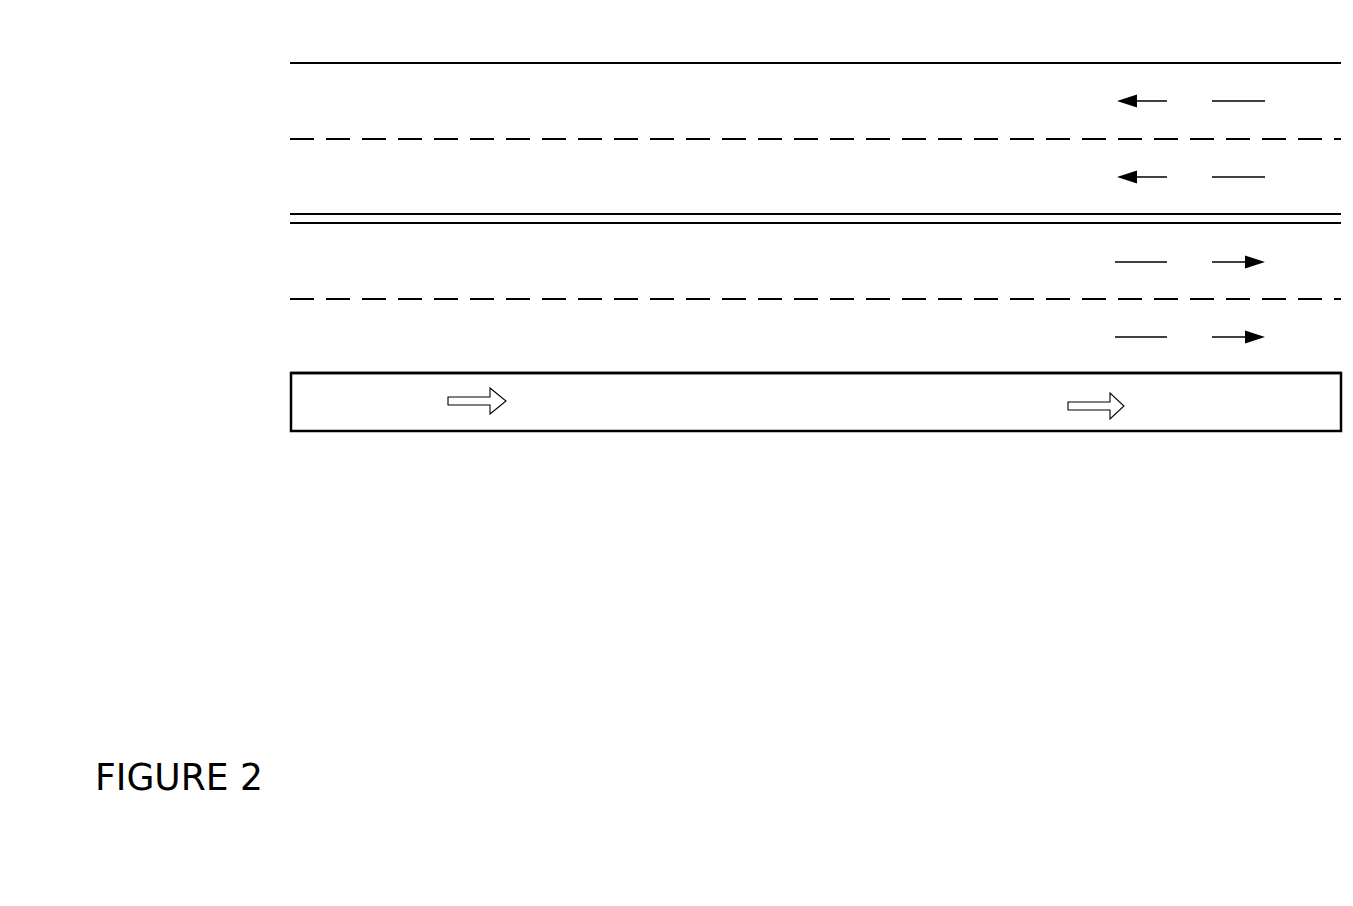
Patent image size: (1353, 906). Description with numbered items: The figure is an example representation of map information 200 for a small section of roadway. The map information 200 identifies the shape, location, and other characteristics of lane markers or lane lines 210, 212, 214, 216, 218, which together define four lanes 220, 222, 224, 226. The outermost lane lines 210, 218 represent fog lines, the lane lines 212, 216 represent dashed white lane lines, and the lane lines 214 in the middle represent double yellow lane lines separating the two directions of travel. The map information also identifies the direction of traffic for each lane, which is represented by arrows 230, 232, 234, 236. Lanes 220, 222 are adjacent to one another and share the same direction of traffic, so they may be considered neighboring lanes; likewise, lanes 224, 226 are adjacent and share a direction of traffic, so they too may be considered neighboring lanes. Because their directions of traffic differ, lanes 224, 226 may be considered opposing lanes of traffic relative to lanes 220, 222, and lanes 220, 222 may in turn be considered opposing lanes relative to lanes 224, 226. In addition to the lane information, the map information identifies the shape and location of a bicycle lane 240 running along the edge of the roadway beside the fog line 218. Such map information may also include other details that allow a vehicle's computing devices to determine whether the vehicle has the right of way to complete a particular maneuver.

The map information 200 is at (198, 732).
The lane line 210 is at (290, 63).
The lane line 212 is at (290, 139).
The lane lines 214 is at (290, 223).
The lane line 216 is at (290, 299).
The lane line 218 is at (290, 373).
The lane 220 is at (383, 113).
The lane 222 is at (383, 188).
The lane 224 is at (383, 274).
The lane 226 is at (383, 347).
The arrow 230 is at (1191, 101).
The arrow 232 is at (1191, 177).
The arrow 234 is at (1190, 262).
The arrow 236 is at (1190, 337).
The bicycle lane 240 is at (837, 413).